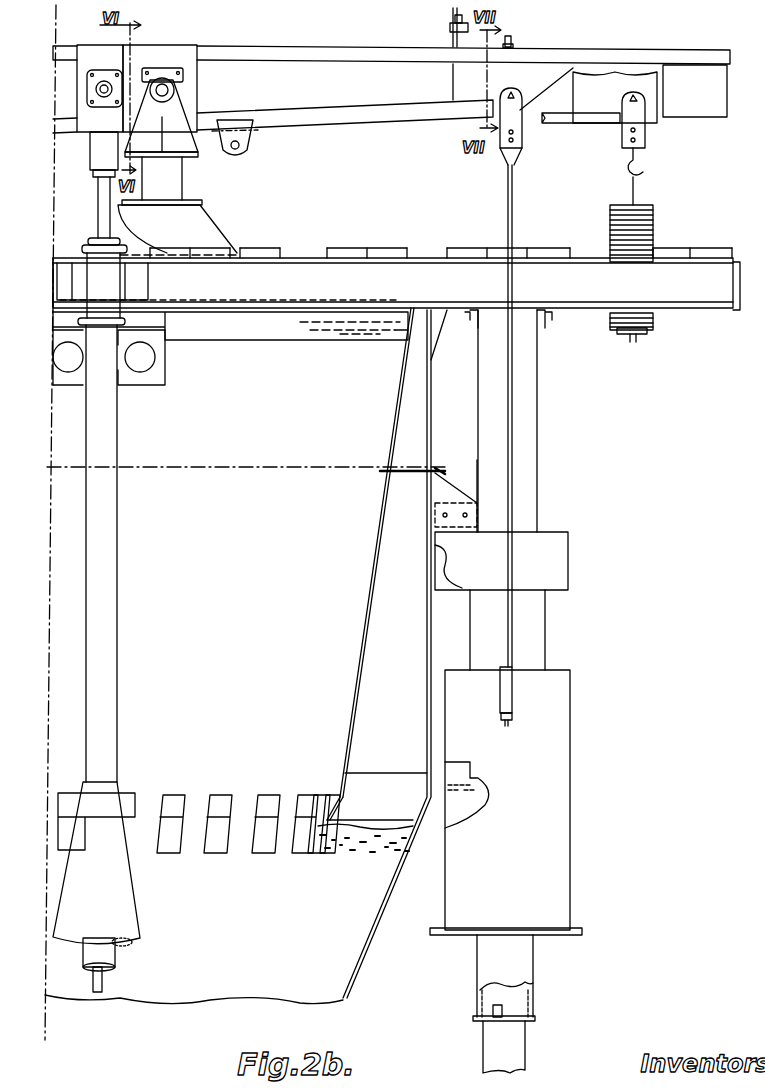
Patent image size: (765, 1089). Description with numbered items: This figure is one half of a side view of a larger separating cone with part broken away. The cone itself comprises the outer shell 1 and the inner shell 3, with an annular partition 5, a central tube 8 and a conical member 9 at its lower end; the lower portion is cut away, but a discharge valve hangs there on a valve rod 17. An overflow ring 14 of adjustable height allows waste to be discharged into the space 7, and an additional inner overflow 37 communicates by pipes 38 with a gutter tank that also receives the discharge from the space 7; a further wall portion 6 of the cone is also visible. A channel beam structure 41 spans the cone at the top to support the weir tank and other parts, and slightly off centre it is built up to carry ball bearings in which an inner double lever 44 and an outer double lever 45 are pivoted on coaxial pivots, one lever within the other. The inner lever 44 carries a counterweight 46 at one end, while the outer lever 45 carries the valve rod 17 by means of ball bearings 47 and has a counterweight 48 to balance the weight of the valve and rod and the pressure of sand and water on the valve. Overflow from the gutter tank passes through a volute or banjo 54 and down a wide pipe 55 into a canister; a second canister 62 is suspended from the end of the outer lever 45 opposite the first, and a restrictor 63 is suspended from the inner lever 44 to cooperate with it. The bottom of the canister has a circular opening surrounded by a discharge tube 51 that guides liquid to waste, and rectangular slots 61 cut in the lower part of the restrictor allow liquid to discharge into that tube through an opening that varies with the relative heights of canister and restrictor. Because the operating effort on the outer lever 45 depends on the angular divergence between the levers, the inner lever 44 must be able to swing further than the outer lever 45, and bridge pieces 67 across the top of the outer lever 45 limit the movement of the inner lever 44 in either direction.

The outer shell 1 is at (380, 913).
The inner shell 3 is at (347, 742).
The annular partition 5 is at (402, 475).
The wall portion 6 is at (435, 545).
The space 7 is at (400, 442).
The central tube 8 is at (107, 558).
The conical member 9 is at (127, 923).
The overflow ring 14 is at (412, 308).
The valve rod 17 is at (102, 212).
The inner overflow 37 is at (152, 323).
The pipes 38 is at (65, 368).
The channel beam structure 41 is at (167, 182).
The inner double lever 44 is at (592, 127).
The outer double lever 45 is at (362, 65).
The counterweight 46 is at (647, 230).
The ball bearings 47 is at (112, 88).
The counterweight 48 is at (710, 112).
The discharge tube 51 is at (513, 1048).
The volute or banjo 54 is at (557, 558).
The wide pipe 55 is at (533, 630).
The rectangular slots 61 is at (480, 1015).
The second canister 62 is at (557, 797).
The restrictor 63 is at (520, 1003).
The bridge pieces 67 is at (447, 22).